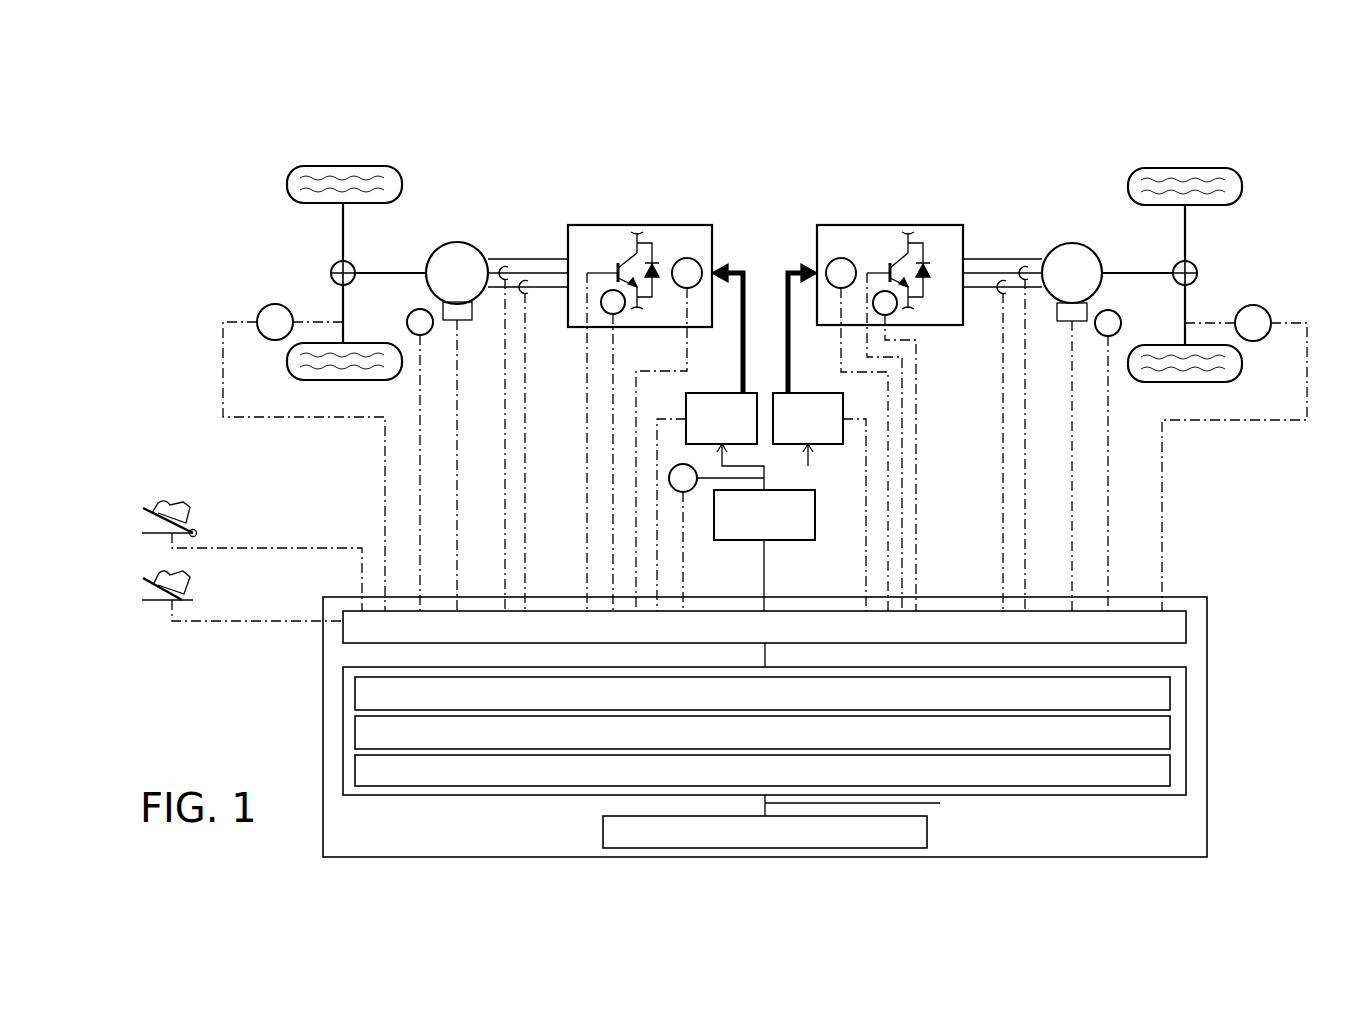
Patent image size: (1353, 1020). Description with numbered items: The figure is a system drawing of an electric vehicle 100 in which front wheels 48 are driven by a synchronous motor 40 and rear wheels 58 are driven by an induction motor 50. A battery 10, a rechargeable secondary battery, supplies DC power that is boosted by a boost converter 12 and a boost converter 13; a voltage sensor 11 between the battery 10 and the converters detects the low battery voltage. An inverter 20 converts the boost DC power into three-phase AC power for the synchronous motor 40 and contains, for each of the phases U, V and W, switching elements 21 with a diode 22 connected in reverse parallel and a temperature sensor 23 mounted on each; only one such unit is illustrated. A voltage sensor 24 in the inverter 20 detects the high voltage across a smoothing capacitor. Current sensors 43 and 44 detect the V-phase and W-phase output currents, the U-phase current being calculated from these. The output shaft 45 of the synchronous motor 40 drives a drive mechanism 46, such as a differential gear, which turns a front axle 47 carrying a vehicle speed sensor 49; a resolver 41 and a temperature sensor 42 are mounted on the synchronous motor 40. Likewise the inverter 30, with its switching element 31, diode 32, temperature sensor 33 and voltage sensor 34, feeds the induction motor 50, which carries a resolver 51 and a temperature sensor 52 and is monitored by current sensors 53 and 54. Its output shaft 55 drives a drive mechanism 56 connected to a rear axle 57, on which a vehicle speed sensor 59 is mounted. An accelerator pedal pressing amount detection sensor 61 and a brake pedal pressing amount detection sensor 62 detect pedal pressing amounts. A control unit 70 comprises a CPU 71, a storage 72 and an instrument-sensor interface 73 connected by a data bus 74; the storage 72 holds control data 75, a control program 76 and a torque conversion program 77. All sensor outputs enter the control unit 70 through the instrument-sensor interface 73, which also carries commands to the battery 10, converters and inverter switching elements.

The electric vehicle 100 is at (233, 150).
The battery 10 is at (797, 540).
The voltage sensor 11 is at (690, 491).
The boost converter 12 is at (725, 393).
The boost converter 13 is at (800, 393).
The inverter 20 is at (660, 225).
The switching element 21 is at (625, 252).
The diode 22 is at (658, 265).
The temperature sensor 23 is at (606, 313).
The voltage sensor 24 is at (692, 259).
The inverter 30 is at (893, 225).
The switching element 31 is at (892, 258).
The diode 32 is at (928, 262).
The temperature sensor 33 is at (896, 313).
The voltage sensor 34 is at (841, 258).
The synchronous motor 40 is at (457, 242).
The resolver 41 is at (468, 322).
The temperature sensor 42 is at (427, 336).
The current sensor 43 is at (505, 266).
The current sensor 44 is at (527, 281).
The output shaft 45 is at (390, 275).
The drive mechanism 46 is at (332, 268).
The front axle 47 is at (343, 222).
The front wheels 48 is at (340, 166).
The vehicle speed sensor 49 is at (258, 314).
The induction motor 50 is at (1072, 242).
The resolver 51 is at (1063, 323).
The temperature sensor 52 is at (1122, 323).
The current sensor 53 is at (1026, 266).
The current sensor 54 is at (1003, 281).
The output shaft 55 is at (1130, 273).
The drive mechanism 56 is at (1198, 266).
The rear axle 57 is at (1188, 226).
The rear wheels 58 is at (1195, 168).
The vehicle speed sensor 59 is at (1260, 306).
The accelerator pedal pressing amount detection sensor 61 is at (157, 520).
The brake pedal pressing amount detection sensor 62 is at (165, 598).
The control unit 70 is at (1207, 600).
The CPU 71 is at (927, 832).
The storage 72 is at (1186, 678).
The instrument-sensor interface 73 is at (1186, 627).
The data bus 74 is at (940, 803).
The control data 75 is at (1170, 773).
The control program 76 is at (1170, 738).
The torque conversion program 77 is at (1170, 700).